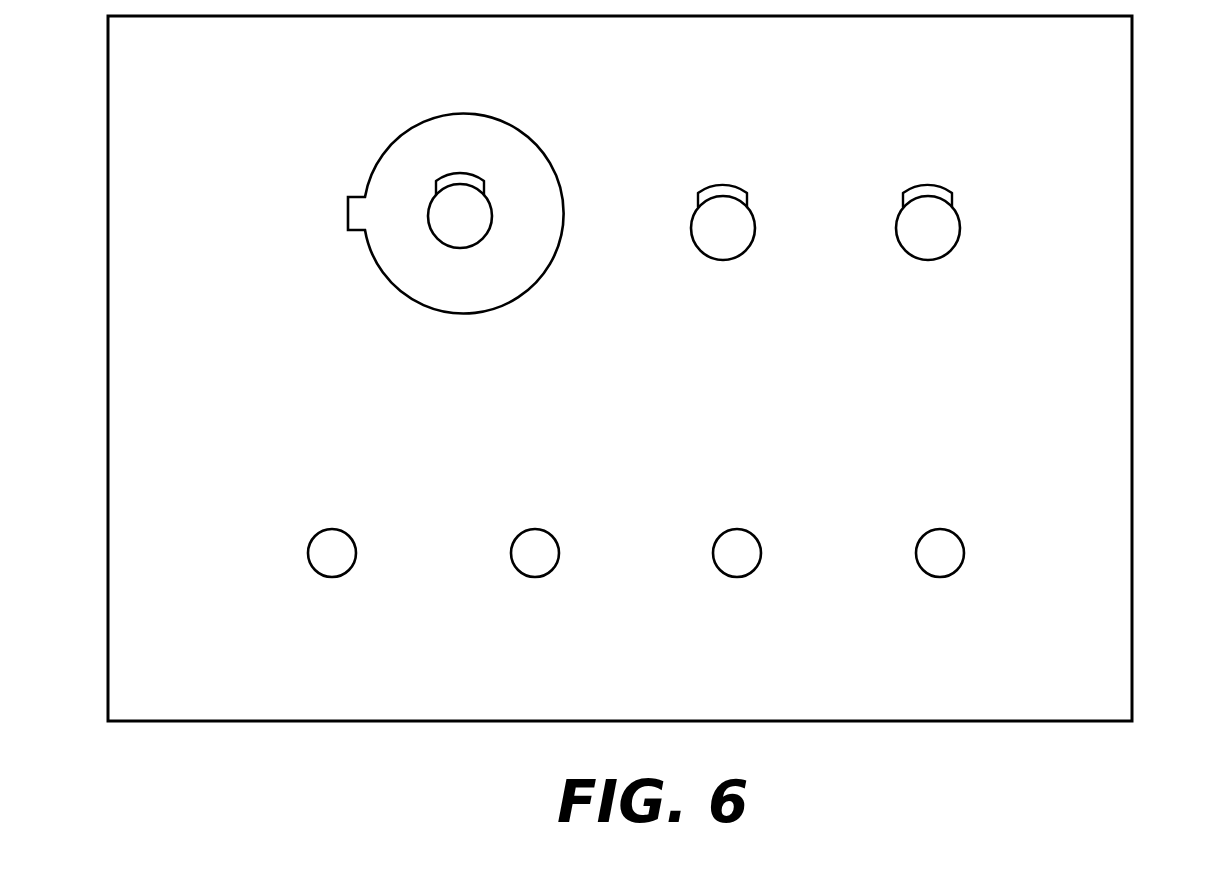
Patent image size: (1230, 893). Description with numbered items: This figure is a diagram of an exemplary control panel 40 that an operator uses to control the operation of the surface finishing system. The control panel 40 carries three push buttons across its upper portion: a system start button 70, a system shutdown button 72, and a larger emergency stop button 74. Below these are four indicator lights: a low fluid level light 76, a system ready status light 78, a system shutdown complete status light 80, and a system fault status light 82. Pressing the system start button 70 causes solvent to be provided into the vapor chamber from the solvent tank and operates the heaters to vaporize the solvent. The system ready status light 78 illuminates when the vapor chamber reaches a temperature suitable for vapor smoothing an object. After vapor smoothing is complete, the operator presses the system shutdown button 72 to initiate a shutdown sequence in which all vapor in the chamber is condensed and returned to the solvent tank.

The control panel 40 is at (1117, 103).
The system start button 70 is at (755, 222).
The system shutdown button 72 is at (960, 222).
The emergency stop button 74 is at (492, 217).
The low fluid level light 76 is at (357, 548).
The system ready status light 78 is at (560, 550).
The system shutdown complete status light 80 is at (762, 547).
The system fault status light 82 is at (965, 550).